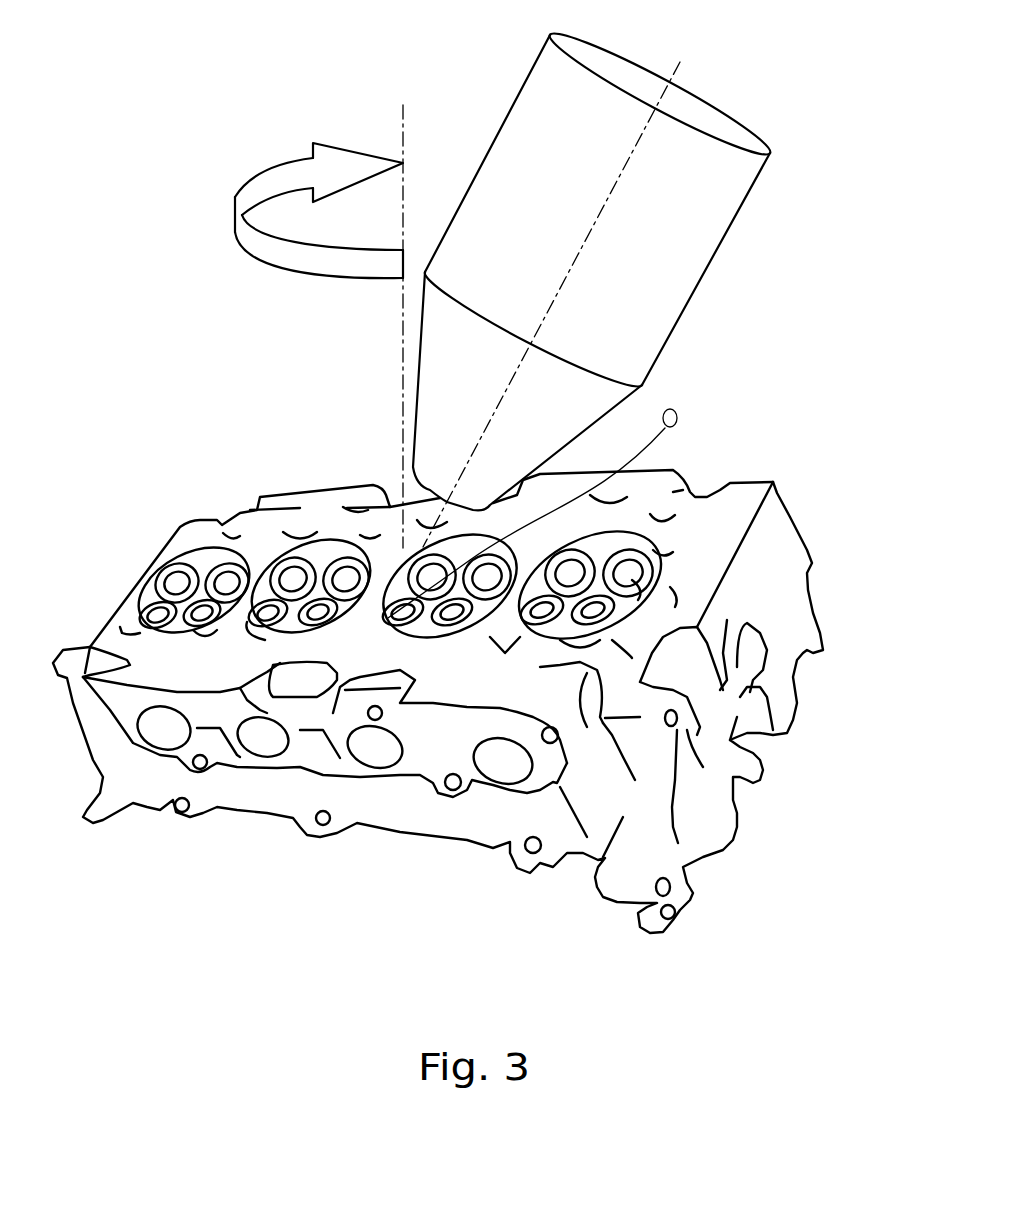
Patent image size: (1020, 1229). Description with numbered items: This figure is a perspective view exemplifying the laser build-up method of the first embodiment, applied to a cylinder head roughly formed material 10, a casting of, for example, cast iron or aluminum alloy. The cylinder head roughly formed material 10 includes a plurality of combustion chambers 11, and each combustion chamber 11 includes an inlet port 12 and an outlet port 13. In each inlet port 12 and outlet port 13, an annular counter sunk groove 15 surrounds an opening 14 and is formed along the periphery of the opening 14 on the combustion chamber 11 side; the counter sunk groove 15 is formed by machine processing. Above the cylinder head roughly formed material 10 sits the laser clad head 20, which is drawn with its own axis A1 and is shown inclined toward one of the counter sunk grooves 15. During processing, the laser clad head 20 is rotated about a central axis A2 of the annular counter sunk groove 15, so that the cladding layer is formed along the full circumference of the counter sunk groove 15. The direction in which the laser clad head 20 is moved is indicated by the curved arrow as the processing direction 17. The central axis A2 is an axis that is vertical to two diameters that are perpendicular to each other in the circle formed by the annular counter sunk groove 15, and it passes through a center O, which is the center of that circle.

The cylinder head roughly formed material 10 is at (461, 675).
The combustion chamber 11 is at (212, 562).
The inlet port 12 is at (178, 583).
The outlet port 13 is at (158, 613).
The opening 14 is at (230, 583).
The counter sunk groove 15 is at (173, 568).
The processing direction 17 is at (258, 177).
The laser clad head 20 is at (700, 260).
The tool axis A1 is at (564, 287).
The central axis A2 is at (403, 310).
The center O is at (532, 513).